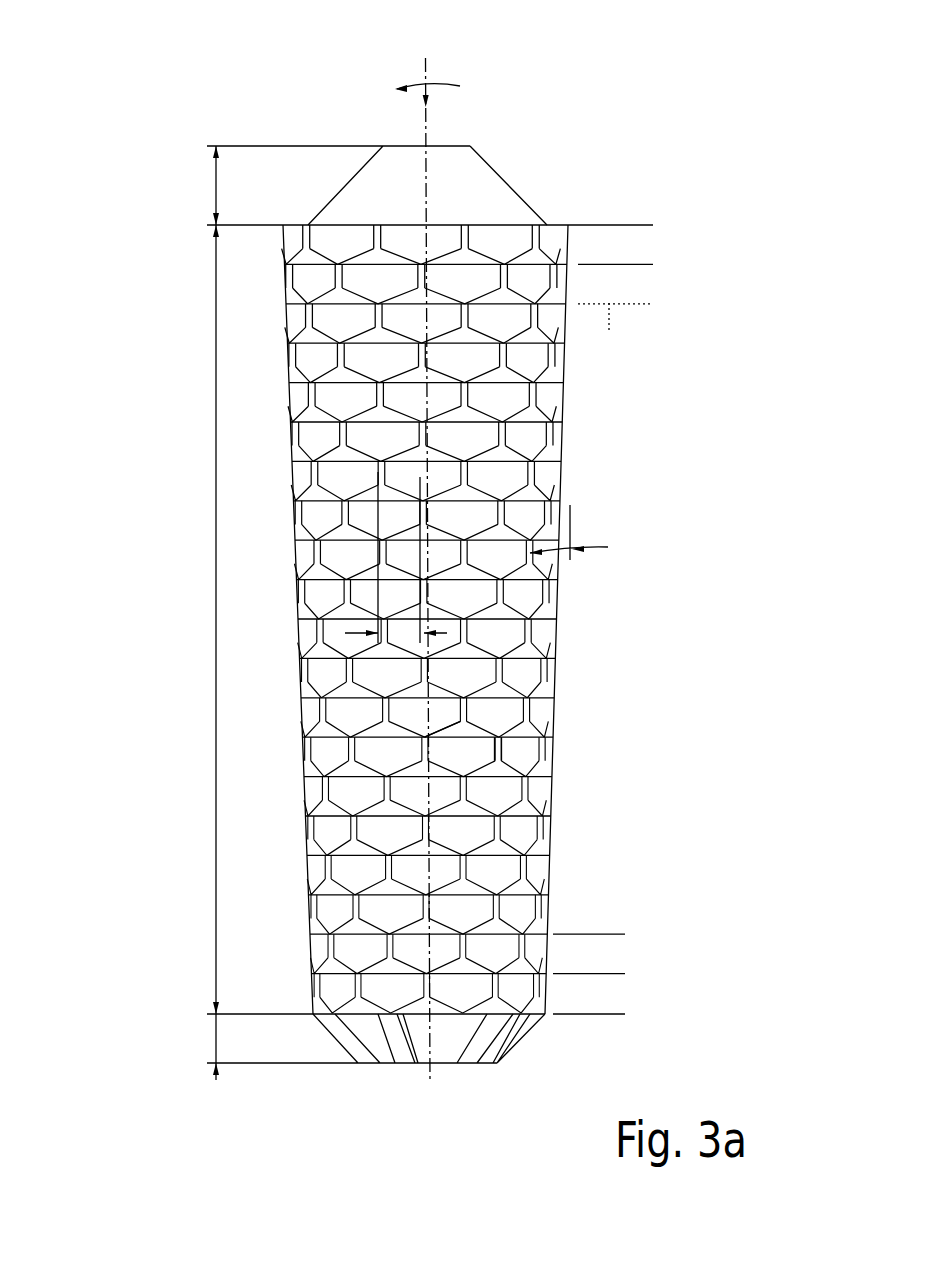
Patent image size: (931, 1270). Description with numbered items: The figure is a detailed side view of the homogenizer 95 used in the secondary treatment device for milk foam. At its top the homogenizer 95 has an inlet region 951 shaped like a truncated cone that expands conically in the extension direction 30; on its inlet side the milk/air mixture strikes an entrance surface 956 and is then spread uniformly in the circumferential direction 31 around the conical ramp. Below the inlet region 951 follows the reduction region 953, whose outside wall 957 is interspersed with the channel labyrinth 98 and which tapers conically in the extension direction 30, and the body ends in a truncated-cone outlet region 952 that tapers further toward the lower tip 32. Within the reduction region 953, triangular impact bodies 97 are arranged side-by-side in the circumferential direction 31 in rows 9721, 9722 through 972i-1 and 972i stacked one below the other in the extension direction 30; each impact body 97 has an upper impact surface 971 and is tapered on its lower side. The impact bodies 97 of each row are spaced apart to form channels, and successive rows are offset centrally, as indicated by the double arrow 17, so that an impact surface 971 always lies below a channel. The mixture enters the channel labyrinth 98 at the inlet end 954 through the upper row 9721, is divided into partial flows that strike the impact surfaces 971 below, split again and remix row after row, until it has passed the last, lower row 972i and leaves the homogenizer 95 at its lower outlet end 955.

The homogenizer 95 is at (638, 110).
The extension direction 30 is at (427, 67).
The circumferential direction 31 is at (443, 89).
The distal end 32 is at (431, 1070).
The entrance surface 956 is at (395, 140).
The inlet region 951 is at (192, 185).
The outlet region 952 is at (240, 1047).
The reduction region 953 is at (195, 619).
The inlet end 954 is at (160, 229).
The outlet end 955 is at (170, 1017).
The outside wall 957 is at (560, 868).
The impact bodies 97 is at (508, 880).
The impact surface 971 is at (503, 762).
The channel labyrinth 98 is at (457, 732).
The upper row of impact bodies 9721 is at (650, 243).
The second row of impact bodies 9722 is at (652, 284).
The penultimate row of impact bodies 972i-1 is at (632, 950).
The lower row of impact bodies 972i is at (632, 990).
The double arrow 17 is at (402, 633).